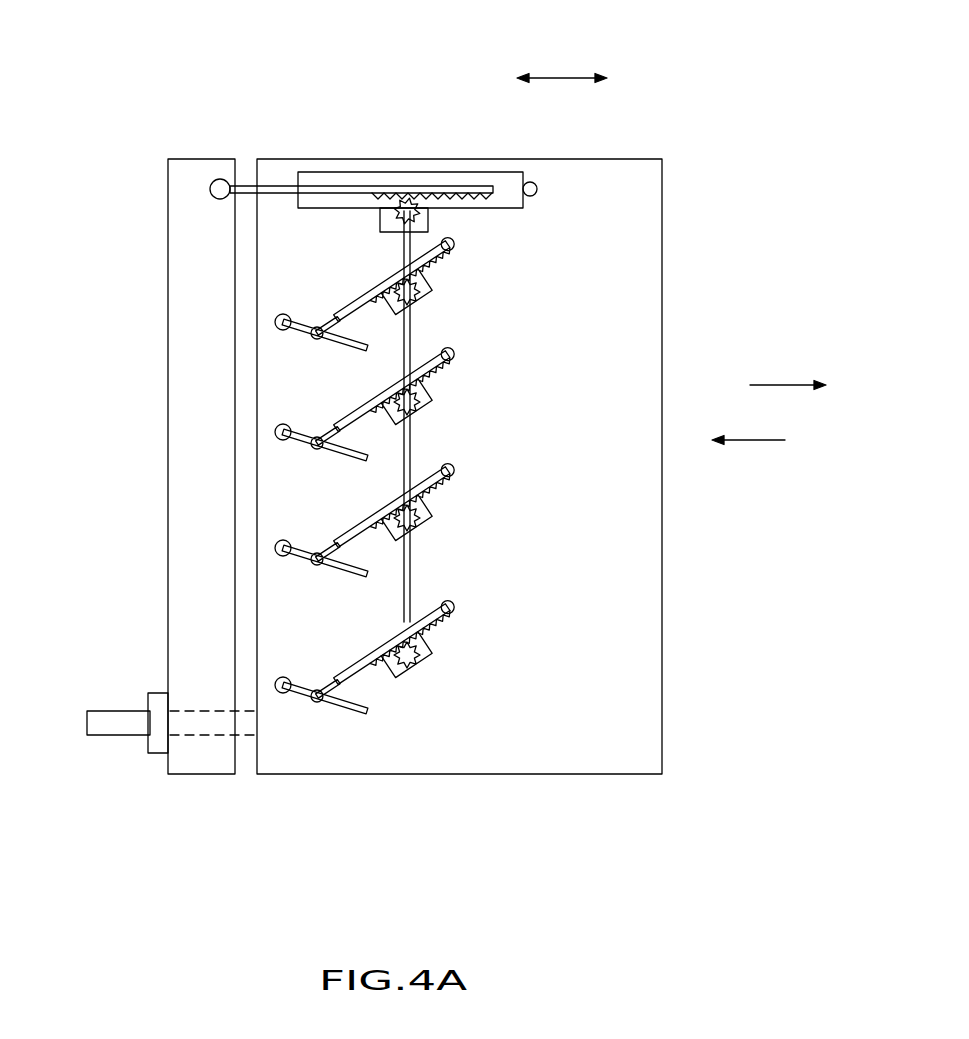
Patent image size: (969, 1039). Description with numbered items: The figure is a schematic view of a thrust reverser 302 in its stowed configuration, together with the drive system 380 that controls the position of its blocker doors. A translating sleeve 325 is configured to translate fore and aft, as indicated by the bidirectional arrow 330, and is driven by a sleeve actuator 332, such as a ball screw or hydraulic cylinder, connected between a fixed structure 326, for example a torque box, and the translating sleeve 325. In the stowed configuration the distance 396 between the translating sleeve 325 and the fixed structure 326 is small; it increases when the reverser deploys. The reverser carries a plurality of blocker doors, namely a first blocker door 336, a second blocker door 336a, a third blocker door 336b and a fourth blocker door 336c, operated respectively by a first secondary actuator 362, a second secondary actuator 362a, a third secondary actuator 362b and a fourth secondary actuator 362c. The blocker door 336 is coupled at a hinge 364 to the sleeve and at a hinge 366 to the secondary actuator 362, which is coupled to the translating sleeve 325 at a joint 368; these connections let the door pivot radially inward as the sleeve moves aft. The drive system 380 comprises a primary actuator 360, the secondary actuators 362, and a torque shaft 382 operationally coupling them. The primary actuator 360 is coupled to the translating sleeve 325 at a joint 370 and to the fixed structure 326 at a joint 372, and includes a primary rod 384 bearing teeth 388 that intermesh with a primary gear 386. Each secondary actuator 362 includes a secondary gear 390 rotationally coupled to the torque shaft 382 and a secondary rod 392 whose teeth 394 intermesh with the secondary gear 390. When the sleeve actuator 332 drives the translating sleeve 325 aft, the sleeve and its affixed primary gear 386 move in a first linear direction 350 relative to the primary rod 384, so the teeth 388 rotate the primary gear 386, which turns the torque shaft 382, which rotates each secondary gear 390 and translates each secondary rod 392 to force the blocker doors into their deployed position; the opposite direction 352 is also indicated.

The thrust reverser 302 is at (398, 424).
The translating sleeve 325 is at (636, 335).
The fixed structure 326 is at (217, 453).
The bidirectional arrow 330 is at (565, 76).
The sleeve actuator 332 is at (128, 742).
The blocker door 336 is at (290, 695).
The second blocker door 336a is at (293, 552).
The third blocker door 336b is at (290, 444).
The fourth blocker door 336c is at (288, 332).
The first linear direction 350 is at (766, 385).
The second direction 352 is at (768, 440).
The primary actuator 360 is at (385, 165).
The secondary actuator 362 is at (415, 672).
The second secondary actuator 362a is at (456, 497).
The third secondary actuator 362b is at (455, 392).
The fourth secondary actuator 362c is at (455, 287).
The hinge 364 is at (282, 676).
The hinge 366 is at (322, 700).
The joint 368 is at (452, 612).
The joint 370 is at (525, 184).
The joint 372 is at (213, 181).
The drive system 380 is at (401, 422).
The torque shaft 382 is at (413, 560).
The primary rod 384 is at (297, 180).
The primary gear 386 is at (393, 208).
The teeth 388 is at (484, 202).
The secondary gear 390 is at (425, 672).
The secondary rod 392 is at (358, 652).
The teeth 394 is at (440, 630).
The distance 396 is at (235, 776).